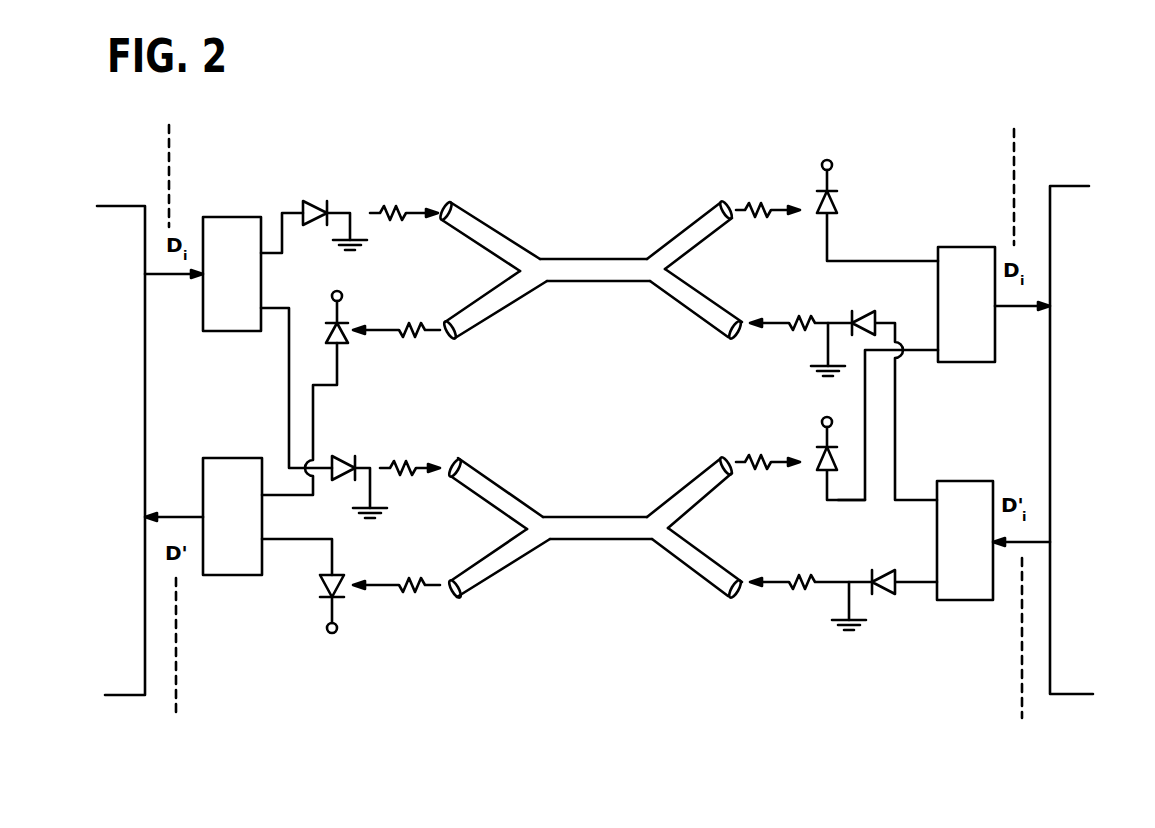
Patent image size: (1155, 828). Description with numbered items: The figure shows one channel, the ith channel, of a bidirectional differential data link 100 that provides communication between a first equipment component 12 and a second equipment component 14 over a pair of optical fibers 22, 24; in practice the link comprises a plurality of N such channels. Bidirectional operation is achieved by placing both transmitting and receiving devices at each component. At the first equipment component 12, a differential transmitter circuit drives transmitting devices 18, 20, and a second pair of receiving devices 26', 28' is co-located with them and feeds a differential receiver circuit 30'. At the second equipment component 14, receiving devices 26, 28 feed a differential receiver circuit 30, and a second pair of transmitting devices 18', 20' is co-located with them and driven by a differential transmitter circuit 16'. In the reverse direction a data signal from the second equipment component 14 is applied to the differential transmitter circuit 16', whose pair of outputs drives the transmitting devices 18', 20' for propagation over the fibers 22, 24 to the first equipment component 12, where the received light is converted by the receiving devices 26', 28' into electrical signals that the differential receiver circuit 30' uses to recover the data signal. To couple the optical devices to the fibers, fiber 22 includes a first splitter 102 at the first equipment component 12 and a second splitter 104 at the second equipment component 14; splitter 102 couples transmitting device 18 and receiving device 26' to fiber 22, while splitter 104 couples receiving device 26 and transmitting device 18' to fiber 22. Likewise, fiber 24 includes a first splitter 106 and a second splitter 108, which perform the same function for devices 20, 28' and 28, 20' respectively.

The bidirectional differential data link 100 is at (622, 713).
The first equipment component 12 is at (136, 418).
The second equipment component 14 is at (1054, 423).
The differential transmitter circuit 16' is at (598, 408).
The differential receiver circuit 30 is at (966, 304).
The differential receiver circuit 30' is at (232, 516).
The transmitting device 18 is at (335, 206).
The transmitting device 18' is at (874, 388).
The transmitting device 20 is at (363, 469).
The transmitting device 20' is at (885, 610).
The receiving device 26 is at (877, 210).
The receiving device 26' is at (363, 302).
The receiving device 28 is at (813, 467).
The receiving device 28' is at (302, 604).
The optical fiber 22 is at (574, 259).
The optical fiber 24 is at (572, 517).
The first splitter 102 is at (484, 224).
The second splitter 104 is at (698, 215).
The first splitter 106 is at (497, 575).
The second splitter 108 is at (711, 468).